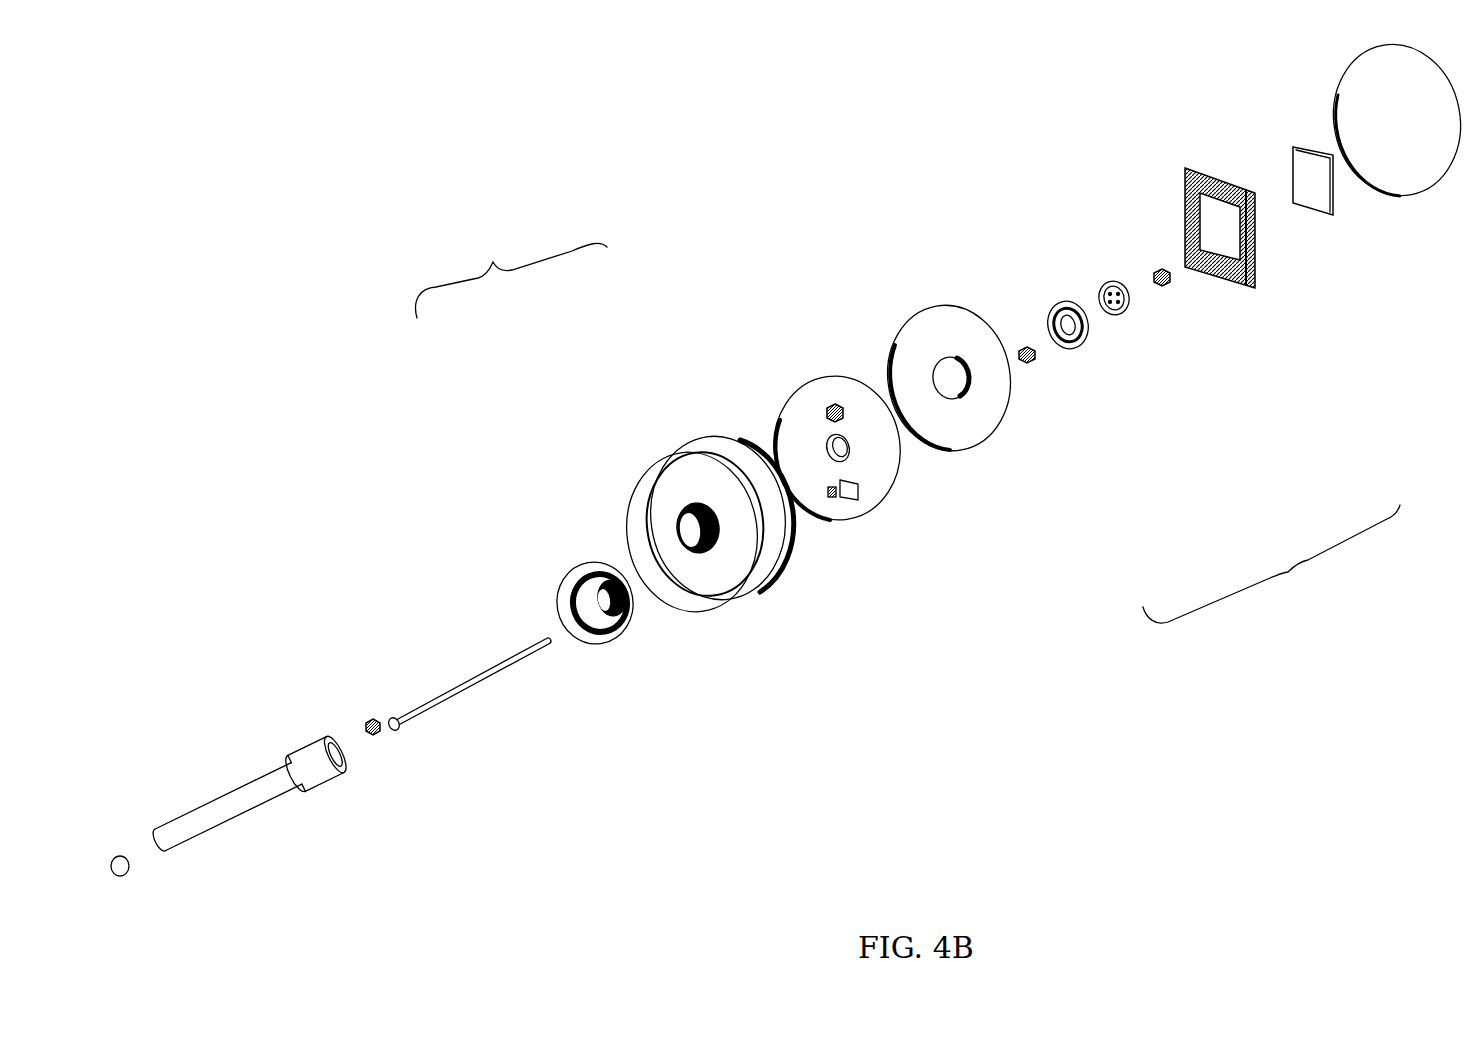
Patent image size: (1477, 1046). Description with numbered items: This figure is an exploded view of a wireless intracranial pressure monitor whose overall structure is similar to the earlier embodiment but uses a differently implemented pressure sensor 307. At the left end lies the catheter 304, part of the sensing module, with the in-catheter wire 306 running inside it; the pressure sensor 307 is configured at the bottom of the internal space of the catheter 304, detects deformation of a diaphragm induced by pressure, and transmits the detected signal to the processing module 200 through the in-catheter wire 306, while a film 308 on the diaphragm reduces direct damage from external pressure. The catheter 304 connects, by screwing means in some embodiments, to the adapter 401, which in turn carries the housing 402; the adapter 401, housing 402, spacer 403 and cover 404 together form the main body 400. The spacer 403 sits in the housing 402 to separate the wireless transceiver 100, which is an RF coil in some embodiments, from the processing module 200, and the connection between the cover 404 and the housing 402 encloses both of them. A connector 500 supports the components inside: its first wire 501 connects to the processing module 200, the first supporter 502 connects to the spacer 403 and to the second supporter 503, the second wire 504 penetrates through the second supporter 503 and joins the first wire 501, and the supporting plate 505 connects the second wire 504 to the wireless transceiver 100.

The wireless transceiver 100 is at (1185, 214).
The processing module 200 is at (870, 503).
The catheter 304 is at (240, 800).
The in-catheter wire 306 is at (411, 712).
The pressure sensor 307 is at (369, 719).
The film 308 is at (118, 856).
The main body 400 is at (511, 271).
The adapter 401 is at (575, 580).
The housing 402 is at (705, 480).
The spacer 403 is at (925, 350).
The cover 404 is at (1385, 125).
The connector 500 is at (1271, 564).
The first wire 501 is at (1030, 361).
The first supporter 502 is at (1075, 342).
The second supporter 503 is at (1115, 308).
The second wire 504 is at (1163, 287).
The supporting plate 505 is at (1312, 172).